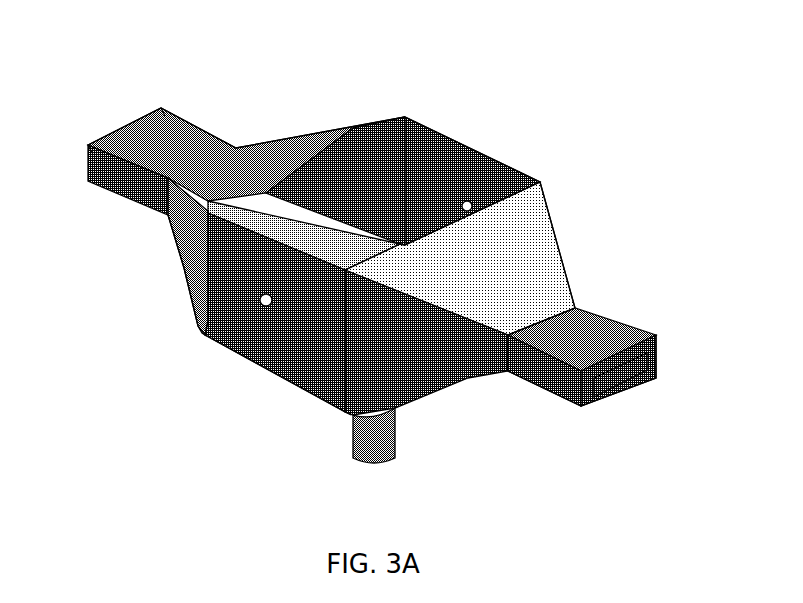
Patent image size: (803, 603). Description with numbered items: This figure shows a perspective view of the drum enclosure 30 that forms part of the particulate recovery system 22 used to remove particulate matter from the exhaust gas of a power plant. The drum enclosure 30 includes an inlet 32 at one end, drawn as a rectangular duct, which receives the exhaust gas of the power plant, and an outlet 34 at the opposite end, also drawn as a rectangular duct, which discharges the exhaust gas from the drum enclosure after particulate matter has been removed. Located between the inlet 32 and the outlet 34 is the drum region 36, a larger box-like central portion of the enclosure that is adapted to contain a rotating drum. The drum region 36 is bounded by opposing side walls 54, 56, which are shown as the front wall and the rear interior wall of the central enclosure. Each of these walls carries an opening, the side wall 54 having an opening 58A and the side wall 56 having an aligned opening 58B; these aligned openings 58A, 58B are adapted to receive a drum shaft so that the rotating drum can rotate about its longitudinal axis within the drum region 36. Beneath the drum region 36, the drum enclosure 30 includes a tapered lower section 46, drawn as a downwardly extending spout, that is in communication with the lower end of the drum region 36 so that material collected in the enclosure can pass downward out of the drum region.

The particulate recovery system 22 is at (597, 157).
The drum enclosure 30 is at (205, 365).
The inlet 32 is at (587, 325).
The outlet 34 is at (170, 138).
The drum region 36 is at (418, 121).
The tapered lower section 46 is at (382, 397).
The side wall 54 is at (224, 281).
The side wall 56 is at (450, 152).
The opening 58A is at (260, 302).
The opening 58B is at (461, 195).